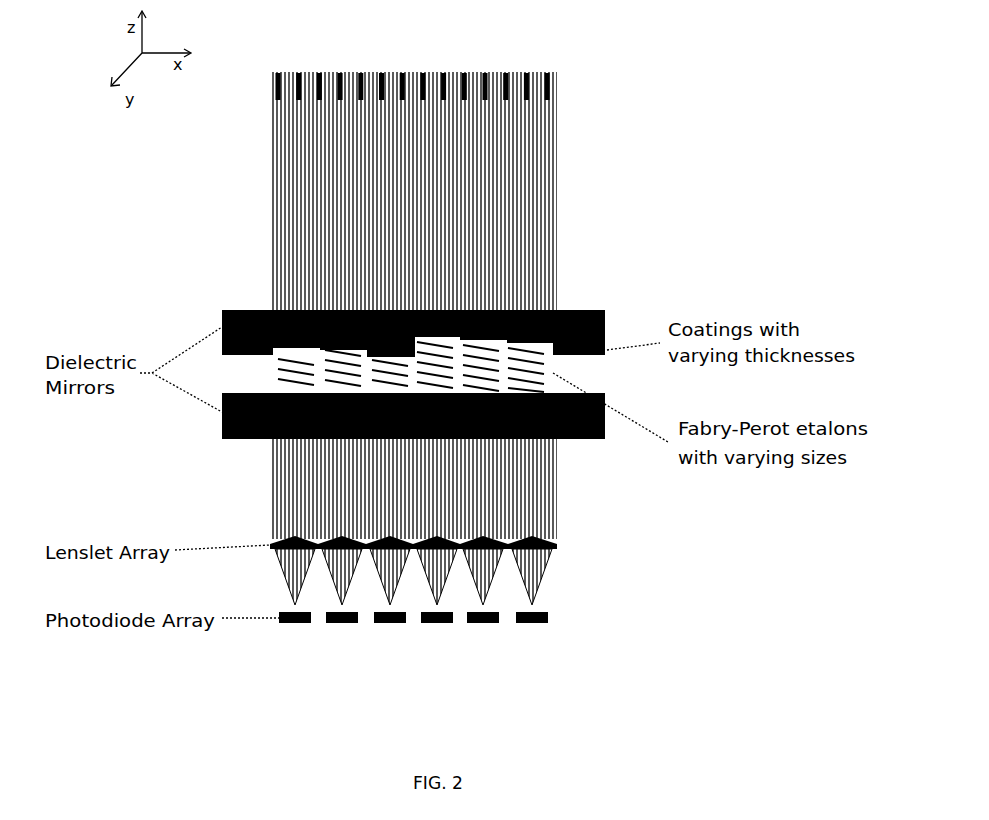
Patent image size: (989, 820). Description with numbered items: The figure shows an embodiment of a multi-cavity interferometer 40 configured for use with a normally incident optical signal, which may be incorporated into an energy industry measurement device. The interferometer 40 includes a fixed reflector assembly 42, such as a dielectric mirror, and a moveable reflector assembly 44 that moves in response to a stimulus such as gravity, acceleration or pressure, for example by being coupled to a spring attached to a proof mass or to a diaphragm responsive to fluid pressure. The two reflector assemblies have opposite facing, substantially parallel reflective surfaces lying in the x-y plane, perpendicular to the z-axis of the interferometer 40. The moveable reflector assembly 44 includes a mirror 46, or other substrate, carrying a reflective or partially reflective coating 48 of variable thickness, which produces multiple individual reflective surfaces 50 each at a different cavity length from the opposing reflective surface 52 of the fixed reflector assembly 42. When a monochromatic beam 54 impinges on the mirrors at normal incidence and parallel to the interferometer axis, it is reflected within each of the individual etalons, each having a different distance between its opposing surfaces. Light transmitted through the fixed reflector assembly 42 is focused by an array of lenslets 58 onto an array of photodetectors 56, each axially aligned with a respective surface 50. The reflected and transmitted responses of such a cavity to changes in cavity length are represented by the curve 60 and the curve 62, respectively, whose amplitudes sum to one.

The interferometer 40 is at (716, 106).
The fixed reflector assembly 42 is at (243, 439).
The moveable reflector assembly 44 is at (567, 312).
The mirror 46 is at (247, 310).
The coating 48 is at (605, 332).
The individual reflective surfaces 50 is at (293, 355).
The opposing reflective surface 52 is at (247, 396).
The monochromatic beam 54 is at (293, 223).
The photodetectors 56 is at (392, 622).
The array of lenslets 58 is at (295, 540).
The curve 60 is at (180, 225).
The curve 62 is at (116, 252).